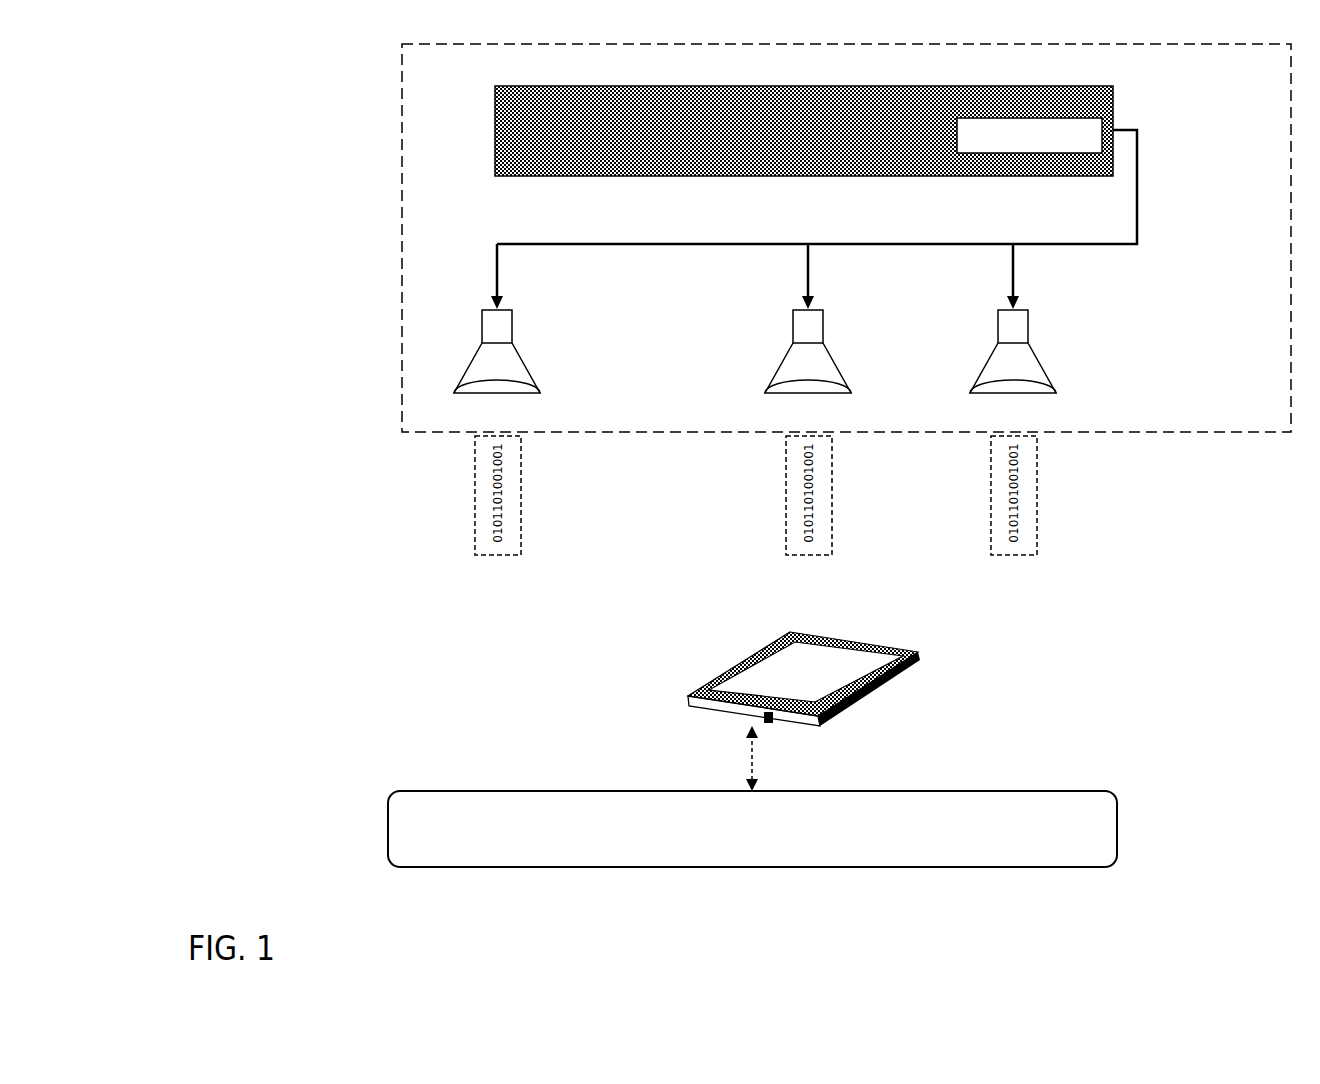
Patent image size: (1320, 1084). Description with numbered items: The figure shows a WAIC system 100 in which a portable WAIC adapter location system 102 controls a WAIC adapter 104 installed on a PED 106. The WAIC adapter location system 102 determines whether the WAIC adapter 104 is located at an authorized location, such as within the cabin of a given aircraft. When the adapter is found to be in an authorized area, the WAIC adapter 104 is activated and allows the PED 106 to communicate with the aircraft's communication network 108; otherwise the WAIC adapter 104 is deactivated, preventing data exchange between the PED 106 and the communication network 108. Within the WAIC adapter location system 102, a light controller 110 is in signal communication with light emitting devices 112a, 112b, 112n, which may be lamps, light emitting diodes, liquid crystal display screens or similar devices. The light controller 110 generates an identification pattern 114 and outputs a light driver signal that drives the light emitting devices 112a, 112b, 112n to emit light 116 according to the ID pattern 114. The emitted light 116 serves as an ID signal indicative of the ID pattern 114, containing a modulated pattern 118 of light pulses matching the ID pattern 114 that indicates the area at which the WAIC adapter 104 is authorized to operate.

The WAIC system 100 is at (180, 120).
The WAIC adapter location system 102 is at (400, 138).
The WAIC adapter 104 is at (728, 717).
The PED 106 is at (840, 677).
The communication network 108 is at (386, 781).
The light controller 110 is at (1113, 113).
The light emitting device 112a is at (521, 362).
The light emitting device 112b is at (828, 365).
The light emitting device 112n is at (1033, 365).
The identification (ID) pattern 114 is at (1023, 118).
The light 116 is at (560, 493).
The modulated pattern 118 is at (476, 515).